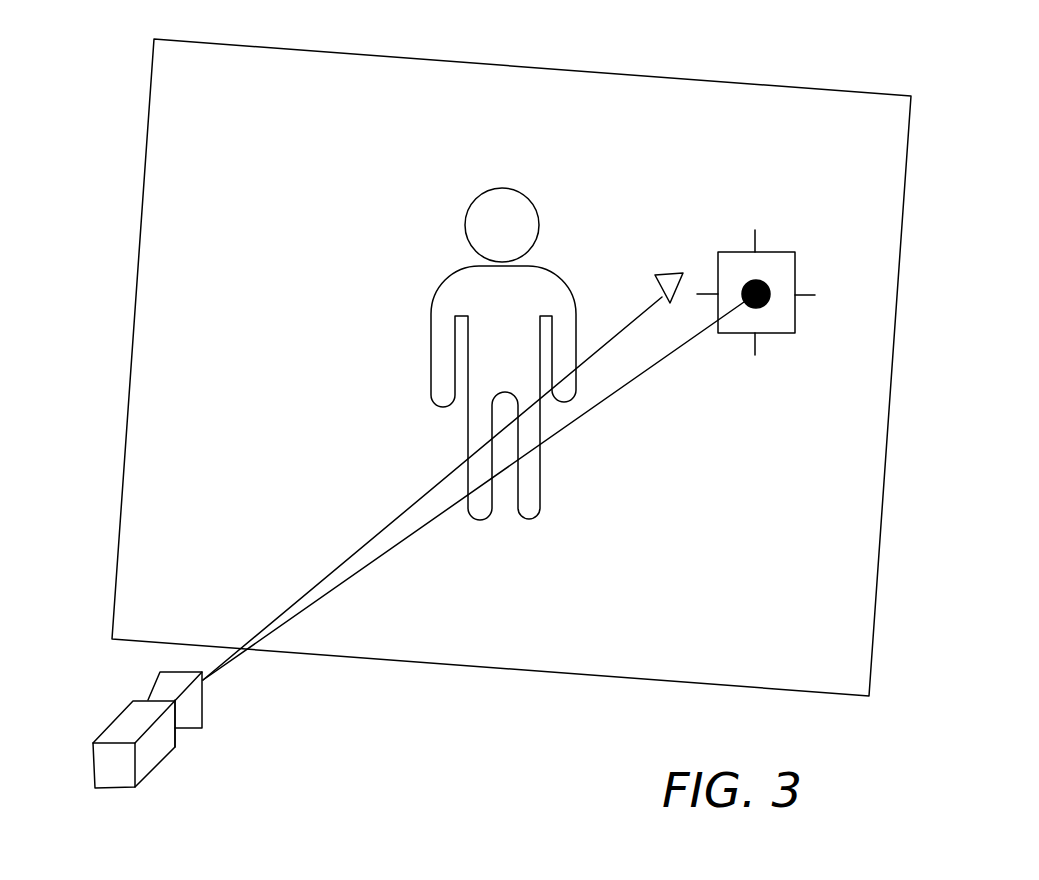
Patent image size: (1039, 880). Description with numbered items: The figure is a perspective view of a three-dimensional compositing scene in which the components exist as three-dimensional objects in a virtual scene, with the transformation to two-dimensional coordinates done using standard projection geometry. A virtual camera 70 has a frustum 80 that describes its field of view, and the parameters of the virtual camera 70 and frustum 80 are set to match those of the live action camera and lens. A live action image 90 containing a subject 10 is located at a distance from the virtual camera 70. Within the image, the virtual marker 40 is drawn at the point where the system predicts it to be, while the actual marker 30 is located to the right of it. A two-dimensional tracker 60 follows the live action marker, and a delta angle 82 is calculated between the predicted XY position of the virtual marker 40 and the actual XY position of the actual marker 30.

The subject 10 is at (535, 268).
The actual marker 30 is at (769, 288).
The virtual marker 40 is at (682, 273).
The 2D tracker 60 is at (795, 307).
The virtual camera 70 is at (155, 772).
The frustum 80 is at (203, 705).
The delta angle 82 is at (332, 569).
The live action image 90 is at (873, 99).